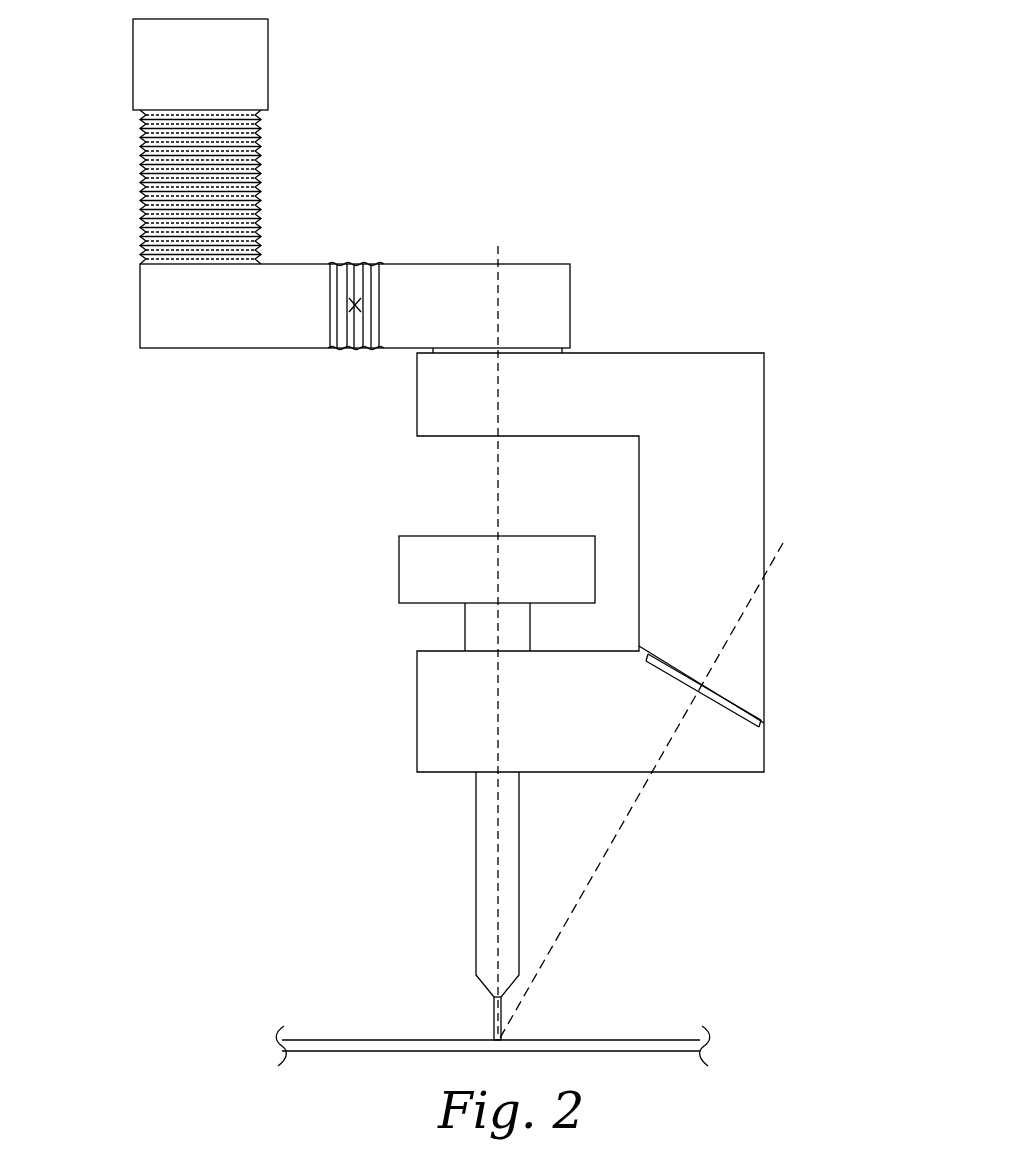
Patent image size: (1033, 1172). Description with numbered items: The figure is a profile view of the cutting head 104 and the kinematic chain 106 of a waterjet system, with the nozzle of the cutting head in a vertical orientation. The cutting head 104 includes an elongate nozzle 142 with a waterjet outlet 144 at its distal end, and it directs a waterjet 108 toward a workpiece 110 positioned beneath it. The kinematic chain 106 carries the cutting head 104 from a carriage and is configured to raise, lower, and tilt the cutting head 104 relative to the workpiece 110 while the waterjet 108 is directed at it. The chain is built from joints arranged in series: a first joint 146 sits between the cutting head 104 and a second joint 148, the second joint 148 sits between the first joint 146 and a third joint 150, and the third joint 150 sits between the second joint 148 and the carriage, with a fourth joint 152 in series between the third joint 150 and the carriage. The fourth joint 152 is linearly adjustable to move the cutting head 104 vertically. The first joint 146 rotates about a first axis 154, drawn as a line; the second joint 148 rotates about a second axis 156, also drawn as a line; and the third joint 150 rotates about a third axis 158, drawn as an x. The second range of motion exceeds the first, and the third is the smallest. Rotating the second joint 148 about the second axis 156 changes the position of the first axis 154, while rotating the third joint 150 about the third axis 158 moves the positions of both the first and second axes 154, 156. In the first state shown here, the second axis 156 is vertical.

The cutting head 104 is at (372, 642).
The kinematic chain 106 is at (650, 231).
The waterjet 108 is at (503, 1031).
The workpiece 110 is at (642, 1040).
The elongate nozzle 142 is at (476, 865).
The waterjet outlet 144 is at (494, 1000).
The first joint 146 is at (735, 702).
The second joint 148 is at (532, 347).
The third joint 150 is at (355, 268).
The fourth joint 152 is at (142, 200).
The first axis 154 is at (618, 830).
The second axis 156 is at (497, 465).
The third axis 158 is at (357, 300).